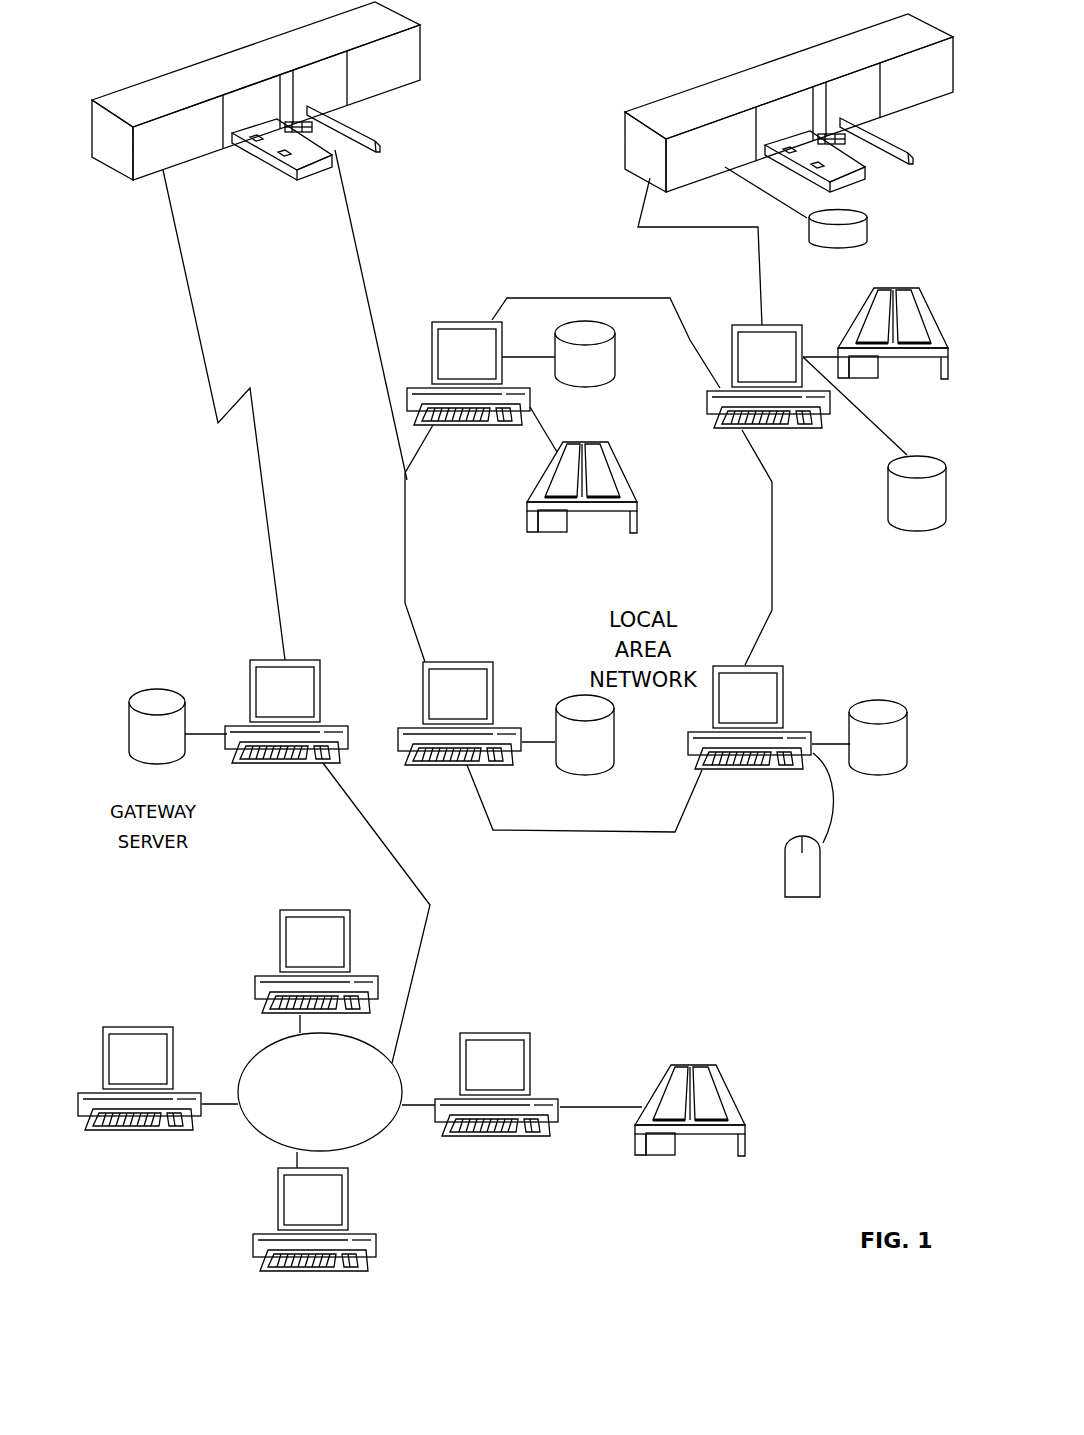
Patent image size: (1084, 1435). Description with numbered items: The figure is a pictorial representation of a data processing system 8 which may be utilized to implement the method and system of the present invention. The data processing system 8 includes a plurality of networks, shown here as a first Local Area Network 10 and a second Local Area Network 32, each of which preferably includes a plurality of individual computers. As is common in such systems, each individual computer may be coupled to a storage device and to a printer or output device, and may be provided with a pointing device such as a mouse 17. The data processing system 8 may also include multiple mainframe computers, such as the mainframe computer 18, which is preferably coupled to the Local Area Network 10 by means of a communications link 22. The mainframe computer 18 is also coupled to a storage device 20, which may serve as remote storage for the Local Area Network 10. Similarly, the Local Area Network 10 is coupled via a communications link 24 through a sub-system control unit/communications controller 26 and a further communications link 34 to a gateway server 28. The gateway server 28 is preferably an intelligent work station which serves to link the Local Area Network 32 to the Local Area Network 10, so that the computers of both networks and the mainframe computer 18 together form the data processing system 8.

The data processing system 8 is at (575, 290).
The Local Area Network 10 is at (570, 832).
The mouse 17 is at (820, 877).
The mainframe computer 18 is at (720, 78).
The storage device 20 is at (868, 225).
The communications link 22 is at (638, 207).
The communications link 24 is at (373, 302).
The sub-system control unit/communications controller 26 is at (190, 65).
The gateway server 28 is at (263, 660).
The Local Area Network 32 is at (265, 1138).
The communications link 34 is at (205, 359).